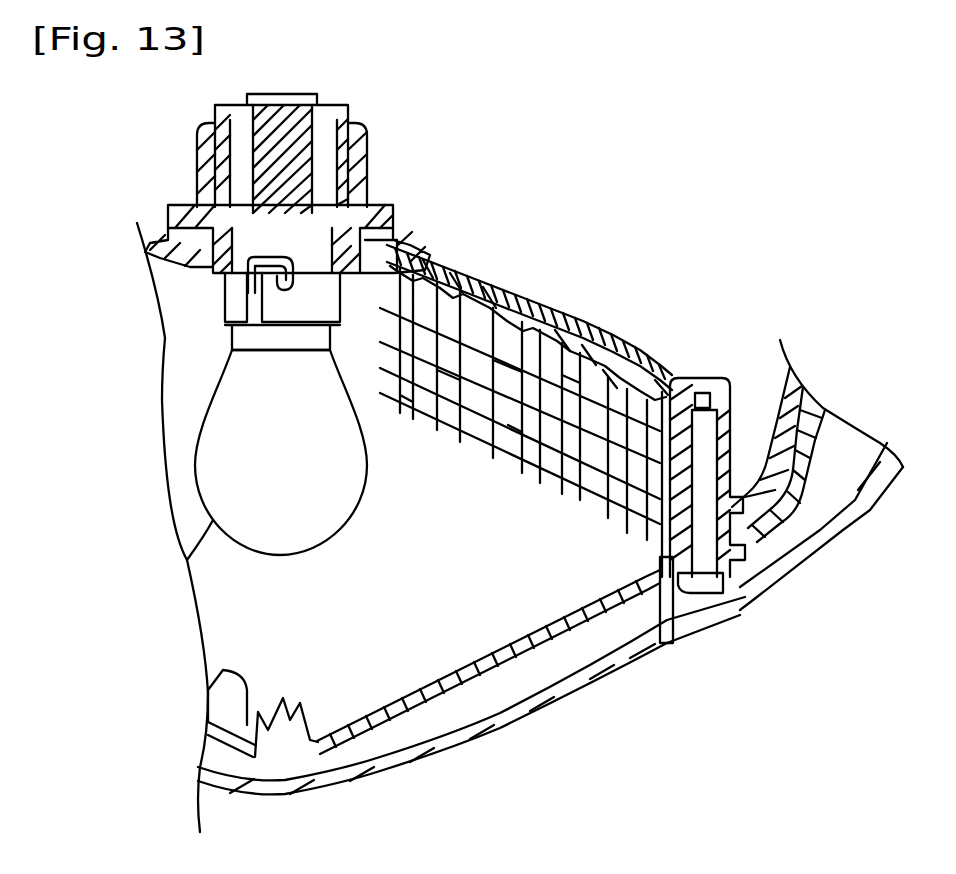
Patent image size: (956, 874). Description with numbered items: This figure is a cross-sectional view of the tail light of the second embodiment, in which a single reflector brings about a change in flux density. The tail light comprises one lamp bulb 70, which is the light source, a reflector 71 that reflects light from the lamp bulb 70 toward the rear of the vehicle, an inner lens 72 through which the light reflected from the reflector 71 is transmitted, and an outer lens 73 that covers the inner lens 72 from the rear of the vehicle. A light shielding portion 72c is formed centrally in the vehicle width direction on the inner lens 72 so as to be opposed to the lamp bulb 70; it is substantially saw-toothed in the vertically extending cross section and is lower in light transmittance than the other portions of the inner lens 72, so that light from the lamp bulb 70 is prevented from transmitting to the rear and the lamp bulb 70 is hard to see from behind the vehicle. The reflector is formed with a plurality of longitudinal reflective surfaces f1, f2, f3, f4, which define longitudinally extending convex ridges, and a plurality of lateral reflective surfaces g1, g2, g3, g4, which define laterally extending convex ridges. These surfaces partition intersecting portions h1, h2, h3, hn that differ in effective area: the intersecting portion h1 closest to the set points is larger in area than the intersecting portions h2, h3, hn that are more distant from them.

The lamp bulb 70 is at (213, 520).
The reflector 71 is at (593, 323).
The inner lens 72 is at (412, 717).
The light shielding portion 72c is at (223, 670).
The outer lens 73 is at (537, 717).
The longitudinal reflective surface f1 is at (560, 335).
The longitudinal reflective surface f2 is at (497, 275).
The longitudinal reflective surface f3 is at (453, 270).
The longitudinal reflective surface f4 is at (427, 258).
The lateral reflective surface g1 is at (733, 520).
The lateral reflective surface g2 is at (735, 598).
The lateral reflective surface g3 is at (697, 593).
The lateral reflective surface g4 is at (670, 637).
The intersecting portion h1 is at (567, 380).
The intersecting portion h2 is at (497, 360).
The intersecting portion h3 is at (468, 375).
The intersecting portion hn is at (425, 400).